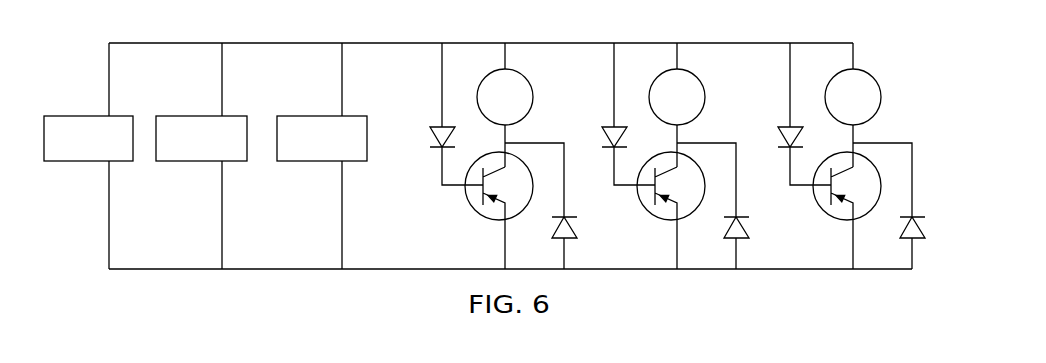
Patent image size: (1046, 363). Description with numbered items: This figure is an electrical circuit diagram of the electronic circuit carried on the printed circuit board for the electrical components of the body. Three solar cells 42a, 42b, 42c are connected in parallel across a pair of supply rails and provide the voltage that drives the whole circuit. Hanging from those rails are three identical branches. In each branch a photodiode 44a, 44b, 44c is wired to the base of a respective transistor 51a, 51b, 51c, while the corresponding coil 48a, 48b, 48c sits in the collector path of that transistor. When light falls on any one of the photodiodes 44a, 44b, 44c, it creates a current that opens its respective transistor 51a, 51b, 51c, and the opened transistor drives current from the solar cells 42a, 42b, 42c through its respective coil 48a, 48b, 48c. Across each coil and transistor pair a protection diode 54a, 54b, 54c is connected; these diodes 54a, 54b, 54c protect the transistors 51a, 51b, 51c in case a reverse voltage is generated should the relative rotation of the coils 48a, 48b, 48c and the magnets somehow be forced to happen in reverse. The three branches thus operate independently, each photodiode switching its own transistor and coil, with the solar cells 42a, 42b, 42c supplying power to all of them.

The solar cell 42a is at (88, 156).
The solar cell 42b is at (201, 156).
The solar cell 42c is at (322, 156).
The photodiode 44a is at (438, 114).
The photodiode 44b is at (610, 114).
The photodiode 44c is at (786, 114).
The coil 48a is at (505, 105).
The coil 48b is at (677, 105).
The coil 48c is at (853, 105).
The transistor 51a is at (476, 210).
The transistor 51b is at (648, 210).
The transistor 51c is at (824, 210).
The diode 54a is at (561, 206).
The diode 54b is at (734, 206).
The diode 54c is at (909, 206).